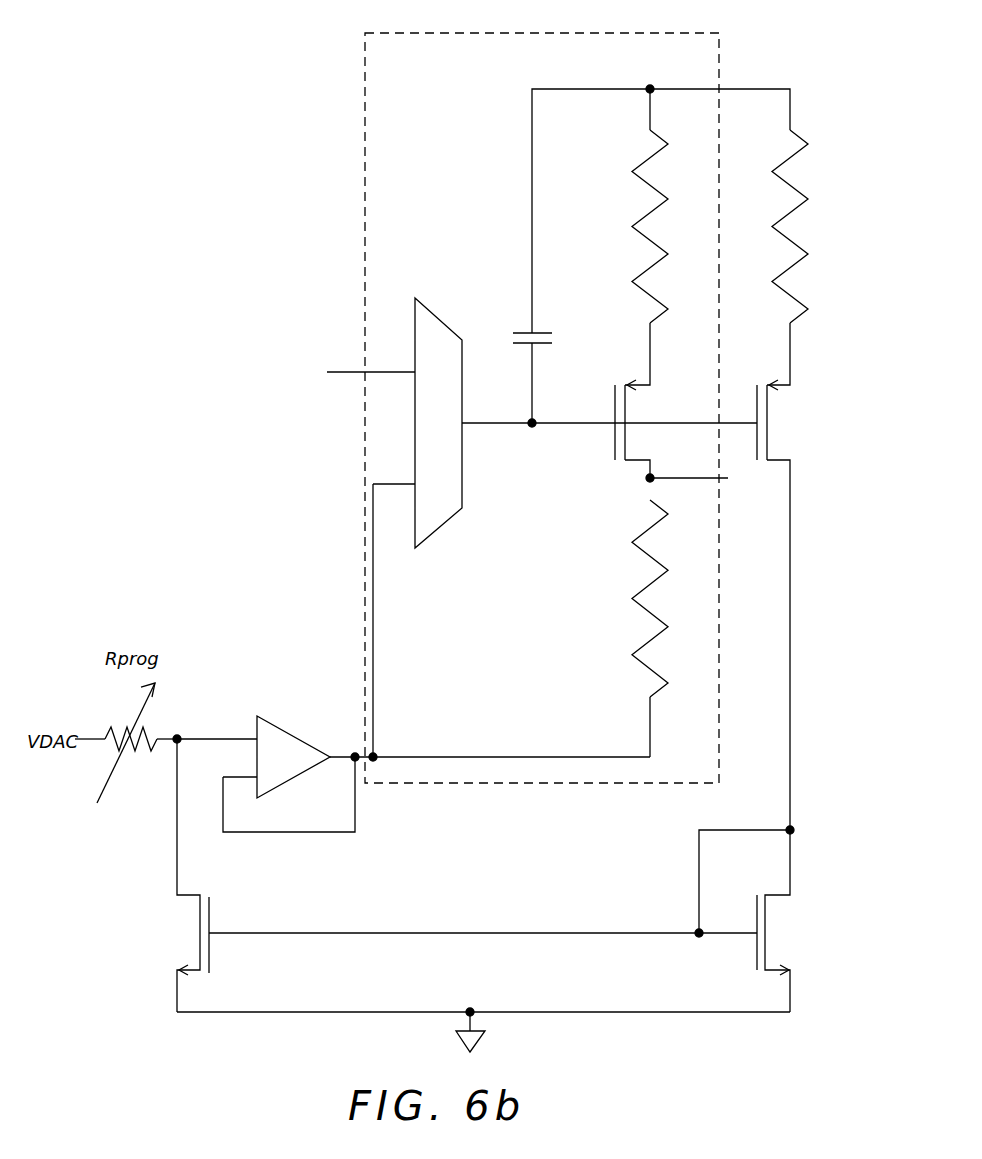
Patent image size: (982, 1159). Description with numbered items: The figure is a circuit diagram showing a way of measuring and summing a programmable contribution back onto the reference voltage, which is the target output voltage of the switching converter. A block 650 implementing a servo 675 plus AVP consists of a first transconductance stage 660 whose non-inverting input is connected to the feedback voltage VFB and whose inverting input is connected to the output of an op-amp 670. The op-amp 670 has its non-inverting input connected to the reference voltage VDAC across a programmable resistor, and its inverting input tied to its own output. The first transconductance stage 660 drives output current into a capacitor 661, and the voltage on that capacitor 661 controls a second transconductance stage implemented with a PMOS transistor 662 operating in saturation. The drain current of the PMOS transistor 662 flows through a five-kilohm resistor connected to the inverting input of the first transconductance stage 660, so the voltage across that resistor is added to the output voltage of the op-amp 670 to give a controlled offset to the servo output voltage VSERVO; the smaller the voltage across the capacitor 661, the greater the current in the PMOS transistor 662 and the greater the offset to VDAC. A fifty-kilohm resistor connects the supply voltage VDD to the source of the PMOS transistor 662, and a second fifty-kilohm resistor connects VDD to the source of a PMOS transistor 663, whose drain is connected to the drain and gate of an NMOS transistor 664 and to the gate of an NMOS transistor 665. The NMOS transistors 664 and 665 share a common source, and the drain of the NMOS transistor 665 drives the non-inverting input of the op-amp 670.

The block 650 is at (318, 48).
The servo 675 is at (365, 145).
The first transconductance (GM) stage 660 is at (443, 320).
The capacitor 661 is at (542, 333).
The PMOS transistor 662 is at (648, 413).
The PMOS transistor 663 is at (790, 413).
The op-amp 670 is at (296, 737).
The NMOS transistor 665 is at (177, 925).
The NMOS transistor 664 is at (788, 922).